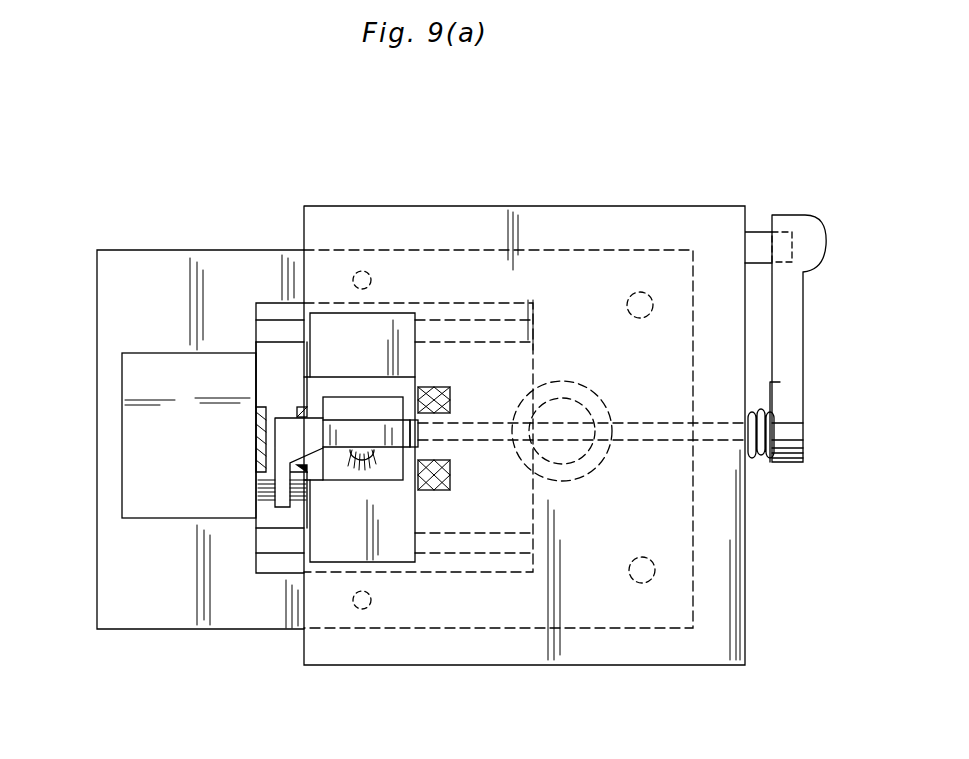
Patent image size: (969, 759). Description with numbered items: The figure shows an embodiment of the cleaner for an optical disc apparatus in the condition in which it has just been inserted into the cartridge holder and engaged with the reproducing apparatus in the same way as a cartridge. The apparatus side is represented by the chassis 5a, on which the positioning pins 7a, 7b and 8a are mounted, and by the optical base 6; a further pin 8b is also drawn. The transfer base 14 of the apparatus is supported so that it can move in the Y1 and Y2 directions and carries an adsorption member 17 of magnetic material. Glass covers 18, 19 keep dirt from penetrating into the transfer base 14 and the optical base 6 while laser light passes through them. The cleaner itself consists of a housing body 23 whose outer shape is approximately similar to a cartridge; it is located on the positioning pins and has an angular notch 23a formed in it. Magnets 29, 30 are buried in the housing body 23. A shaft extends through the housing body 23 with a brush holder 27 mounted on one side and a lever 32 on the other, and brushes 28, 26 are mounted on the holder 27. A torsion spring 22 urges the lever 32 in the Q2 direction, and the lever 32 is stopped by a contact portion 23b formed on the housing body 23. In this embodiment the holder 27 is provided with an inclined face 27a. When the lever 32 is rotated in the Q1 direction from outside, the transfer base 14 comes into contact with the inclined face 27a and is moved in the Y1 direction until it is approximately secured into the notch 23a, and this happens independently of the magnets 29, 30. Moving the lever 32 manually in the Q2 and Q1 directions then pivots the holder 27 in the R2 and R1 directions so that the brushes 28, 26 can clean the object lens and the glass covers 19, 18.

The chassis 5a is at (165, 610).
The optical base 6 is at (150, 468).
The positioning pin 7a is at (645, 292).
The positioning pin 7b is at (645, 583).
The positioning pin 8a is at (363, 268).
The hole 8b is at (362, 609).
The transfer base 14 is at (333, 395).
The adsorption member 17 is at (357, 378).
The glass cover 18 is at (300, 406).
The glass cover 19 is at (255, 352).
The torsion spring 22 is at (757, 452).
The housing body 23 is at (563, 235).
The angular notch 23a is at (368, 322).
The contact portion 23b is at (758, 240).
The brush 26 is at (268, 512).
The brush holder 27 is at (290, 432).
The inclined face 27a is at (357, 408).
The brush 28 is at (348, 452).
The magnet 29 is at (452, 400).
The magnet 30 is at (445, 492).
The lever 32 is at (788, 352).